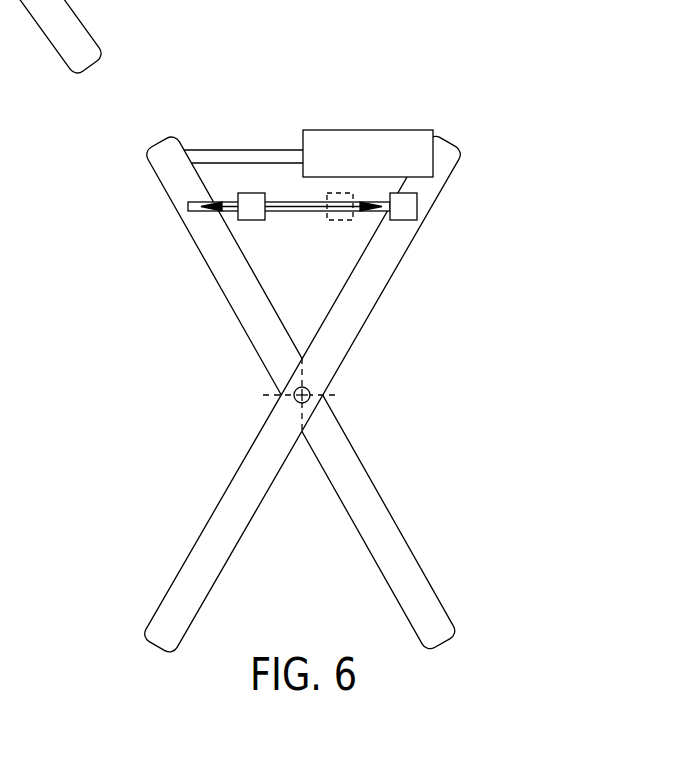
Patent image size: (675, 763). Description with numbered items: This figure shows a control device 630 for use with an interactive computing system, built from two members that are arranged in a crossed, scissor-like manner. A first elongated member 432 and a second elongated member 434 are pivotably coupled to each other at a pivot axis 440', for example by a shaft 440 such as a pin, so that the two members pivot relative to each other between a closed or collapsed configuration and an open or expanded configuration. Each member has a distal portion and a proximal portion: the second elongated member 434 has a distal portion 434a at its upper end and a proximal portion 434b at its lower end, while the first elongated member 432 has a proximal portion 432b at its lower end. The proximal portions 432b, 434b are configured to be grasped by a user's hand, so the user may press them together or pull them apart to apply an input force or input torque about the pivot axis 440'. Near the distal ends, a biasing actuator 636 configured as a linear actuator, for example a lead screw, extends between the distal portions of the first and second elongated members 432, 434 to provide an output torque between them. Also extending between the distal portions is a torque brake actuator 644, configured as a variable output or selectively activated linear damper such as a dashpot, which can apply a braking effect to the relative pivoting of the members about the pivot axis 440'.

The control device 630 is at (289, 327).
The torque brake actuator 644 is at (373, 128).
The biasing actuator 636 is at (247, 193).
The second elongated member 434 is at (284, 393).
The distal portion of the second elongated member 434a is at (143, 157).
The proximal portion of the second elongated member 434b is at (92, 38).
The first elongated member 432 is at (291, 394).
The proximal portion of the first elongated member 432b is at (183, 562).
The shaft 440 is at (372, 406).
The pivot axis 440' is at (343, 388).